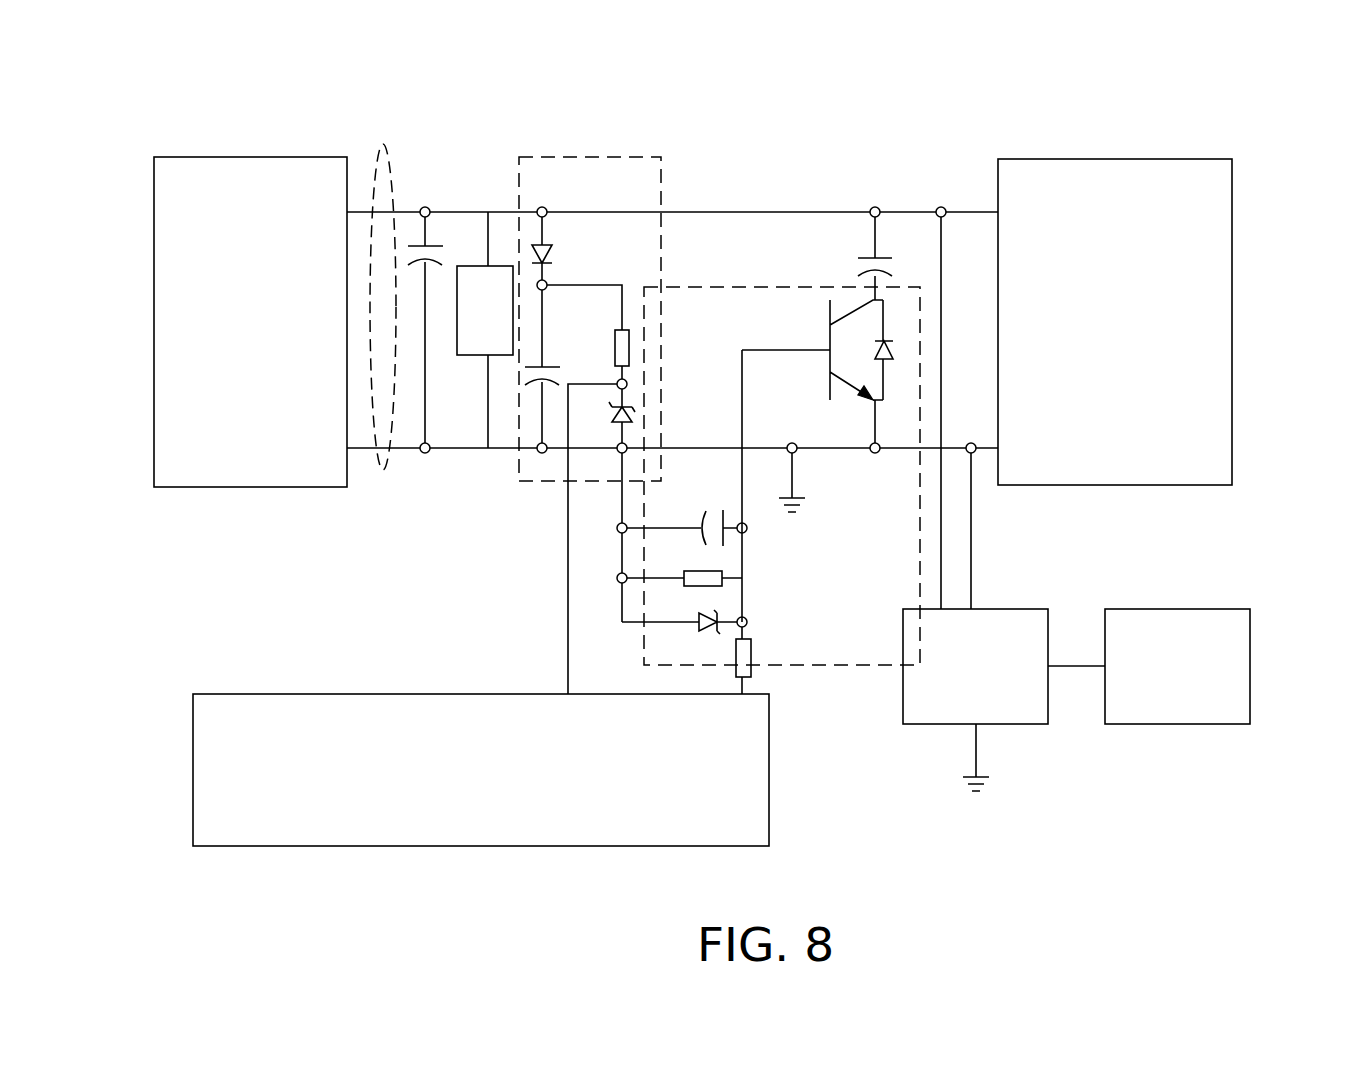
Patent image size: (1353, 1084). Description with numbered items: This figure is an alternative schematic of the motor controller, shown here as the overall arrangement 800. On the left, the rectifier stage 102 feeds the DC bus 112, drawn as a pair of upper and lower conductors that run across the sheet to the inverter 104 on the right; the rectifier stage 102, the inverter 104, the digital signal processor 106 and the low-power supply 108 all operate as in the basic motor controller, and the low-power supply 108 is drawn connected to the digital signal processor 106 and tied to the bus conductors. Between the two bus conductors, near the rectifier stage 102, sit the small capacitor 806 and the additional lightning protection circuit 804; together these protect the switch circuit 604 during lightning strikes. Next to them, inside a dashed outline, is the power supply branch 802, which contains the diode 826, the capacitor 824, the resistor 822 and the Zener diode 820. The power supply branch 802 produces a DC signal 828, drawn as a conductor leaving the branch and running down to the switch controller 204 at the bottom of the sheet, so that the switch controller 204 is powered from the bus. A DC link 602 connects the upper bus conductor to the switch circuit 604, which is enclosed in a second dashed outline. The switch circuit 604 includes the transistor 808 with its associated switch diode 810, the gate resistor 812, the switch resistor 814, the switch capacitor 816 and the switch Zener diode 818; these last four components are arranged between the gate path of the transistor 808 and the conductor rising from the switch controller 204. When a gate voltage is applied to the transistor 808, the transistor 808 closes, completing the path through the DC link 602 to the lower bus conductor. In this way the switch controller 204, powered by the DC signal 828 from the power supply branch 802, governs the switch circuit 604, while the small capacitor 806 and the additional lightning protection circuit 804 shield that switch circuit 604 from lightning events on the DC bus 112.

The system 800 is at (1062, 116).
The rectifier stage 102 is at (241, 332).
The inverter 104 is at (1082, 327).
The digital signal processor 106 is at (1151, 682).
The low-power supply 108 is at (952, 682).
The DC bus 112 is at (382, 146).
The switch controller 204 is at (428, 788).
The DC link 602 is at (890, 260).
The switch circuit 604 is at (717, 286).
The power supply branch 802 is at (568, 155).
The additional lightning protection circuit 804 is at (461, 324).
The small capacitor 806 is at (423, 243).
The transistor 808 is at (828, 338).
The switch diode 810 is at (894, 352).
The gate resistor 812 is at (752, 672).
The switch resistor 814 is at (716, 574).
The switch capacitor 816 is at (704, 513).
The switch Zener diode 818 is at (716, 617).
The Zener diode 820 is at (612, 414).
The resistor 822 is at (617, 328).
The capacitor 824 is at (525, 378).
The diode 826 is at (548, 252).
The DC signal 828 is at (568, 636).